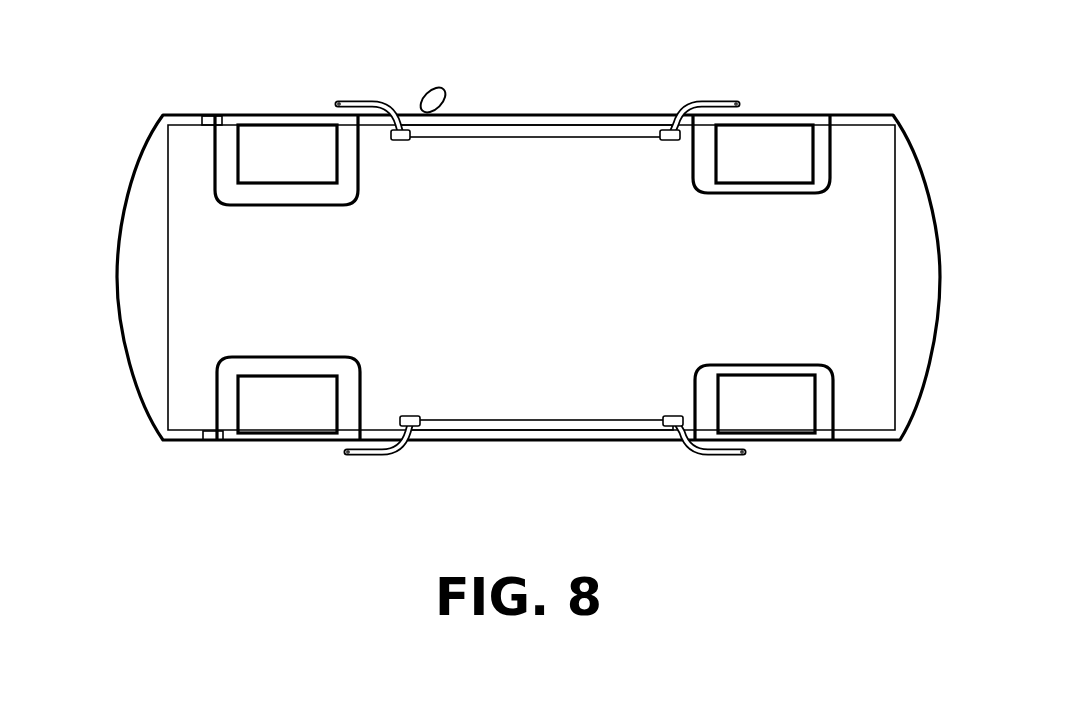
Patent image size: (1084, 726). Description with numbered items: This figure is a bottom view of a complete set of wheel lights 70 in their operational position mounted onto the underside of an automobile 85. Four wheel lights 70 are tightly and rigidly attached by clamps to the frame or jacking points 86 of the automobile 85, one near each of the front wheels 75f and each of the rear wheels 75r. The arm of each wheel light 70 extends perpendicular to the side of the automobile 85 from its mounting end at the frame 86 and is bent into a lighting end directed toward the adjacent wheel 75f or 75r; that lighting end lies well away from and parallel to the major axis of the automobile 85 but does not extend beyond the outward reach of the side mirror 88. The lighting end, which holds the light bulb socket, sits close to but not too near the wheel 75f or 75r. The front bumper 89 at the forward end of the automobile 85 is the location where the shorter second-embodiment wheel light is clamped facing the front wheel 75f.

The wheel light 70 is at (358, 98).
The front wheel 75f is at (273, 142).
The rear wheel 75r is at (763, 142).
The automobile 85 is at (843, 99).
The frame or jacking points 86 is at (538, 133).
The side mirror 88 is at (432, 99).
The front bumper 89 is at (138, 226).